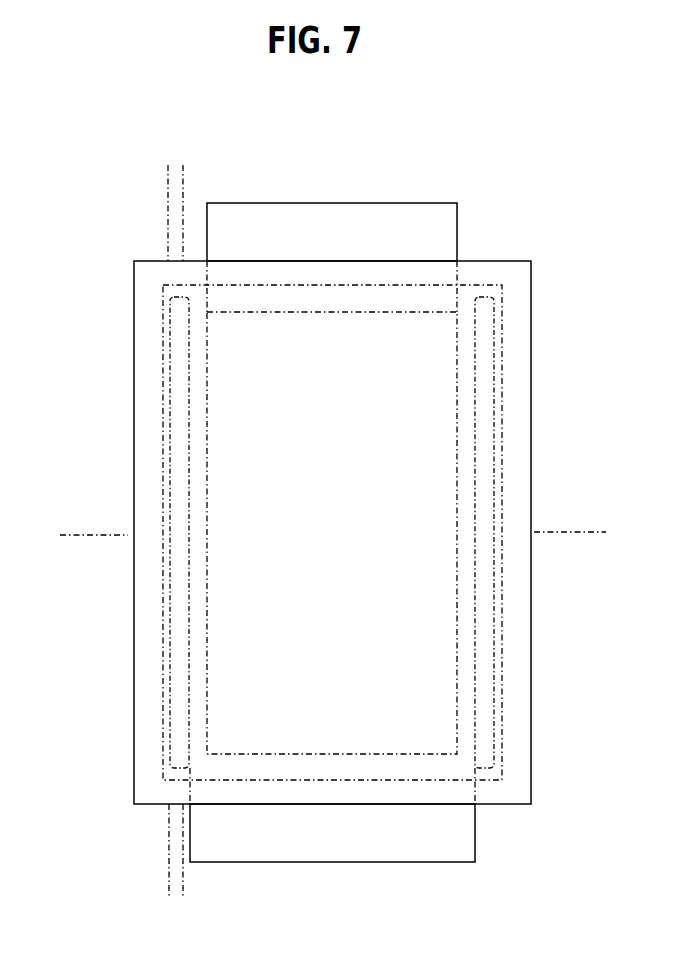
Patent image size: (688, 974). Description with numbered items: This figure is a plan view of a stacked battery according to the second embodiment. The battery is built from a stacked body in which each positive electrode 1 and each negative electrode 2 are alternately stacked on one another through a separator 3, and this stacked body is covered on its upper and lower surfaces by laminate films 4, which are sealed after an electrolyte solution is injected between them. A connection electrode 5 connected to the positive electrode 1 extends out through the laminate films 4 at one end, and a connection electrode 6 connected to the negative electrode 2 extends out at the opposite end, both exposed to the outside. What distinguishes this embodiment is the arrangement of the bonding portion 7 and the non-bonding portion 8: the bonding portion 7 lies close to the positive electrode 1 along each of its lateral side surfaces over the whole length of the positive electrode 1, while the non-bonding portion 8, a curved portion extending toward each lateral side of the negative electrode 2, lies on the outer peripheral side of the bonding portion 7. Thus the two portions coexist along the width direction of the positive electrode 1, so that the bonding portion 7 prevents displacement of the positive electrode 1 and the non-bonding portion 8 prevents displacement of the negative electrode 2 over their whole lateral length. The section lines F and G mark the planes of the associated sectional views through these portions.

The positive electrode 1 is at (443, 424).
The negative electrode 2 is at (467, 607).
The separator 3 is at (510, 737).
The laminate film 4 is at (520, 688).
The connection electrode 5 is at (448, 214).
The connection electrode 6 is at (462, 848).
The bonding portion 7 is at (175, 513).
The non-bonding portion 8 is at (164, 453).
The section line F is at (176, 531).
The section line G is at (334, 535).